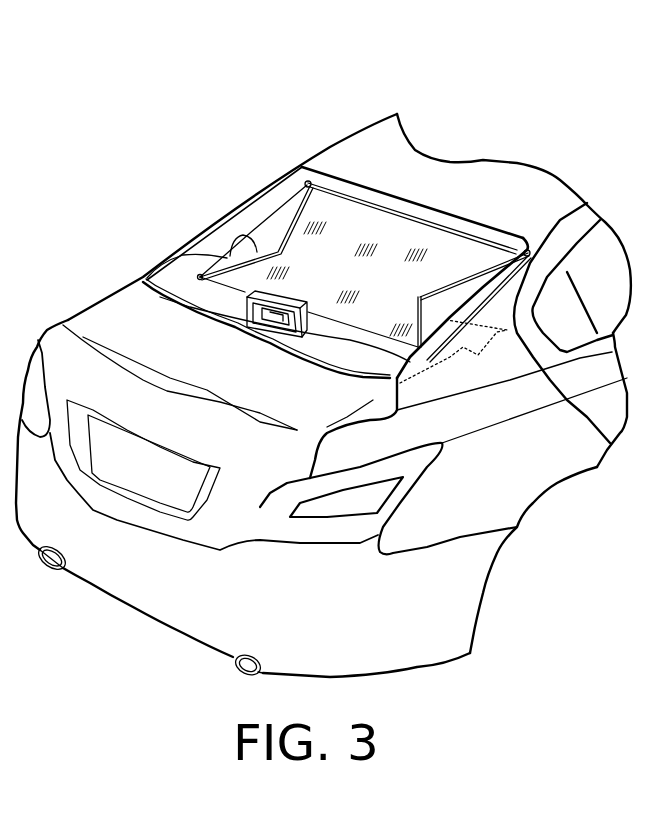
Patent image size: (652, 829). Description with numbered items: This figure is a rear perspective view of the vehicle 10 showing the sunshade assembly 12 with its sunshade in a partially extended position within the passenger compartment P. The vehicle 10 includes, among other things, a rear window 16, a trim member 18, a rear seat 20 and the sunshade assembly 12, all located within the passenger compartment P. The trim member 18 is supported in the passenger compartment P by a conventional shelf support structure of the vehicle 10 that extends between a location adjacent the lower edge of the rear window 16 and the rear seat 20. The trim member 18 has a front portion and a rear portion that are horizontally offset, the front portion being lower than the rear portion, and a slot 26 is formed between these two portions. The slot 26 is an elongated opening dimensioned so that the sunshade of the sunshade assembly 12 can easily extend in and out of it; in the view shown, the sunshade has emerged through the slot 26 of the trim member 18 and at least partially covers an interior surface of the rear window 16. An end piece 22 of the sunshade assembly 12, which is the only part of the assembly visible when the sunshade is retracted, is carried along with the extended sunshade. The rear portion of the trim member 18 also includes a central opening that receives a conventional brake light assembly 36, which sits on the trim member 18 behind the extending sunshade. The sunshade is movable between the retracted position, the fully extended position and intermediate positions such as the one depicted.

The vehicle 10 is at (170, 122).
The sunshade assembly 12 is at (255, 200).
The rear window 16 is at (300, 178).
The trim member 18 is at (183, 273).
The rear seat 20 is at (240, 237).
The end piece 22 is at (418, 218).
The slot 26 is at (240, 290).
The brake light assembly 36 is at (277, 322).
The passenger compartment P is at (612, 270).